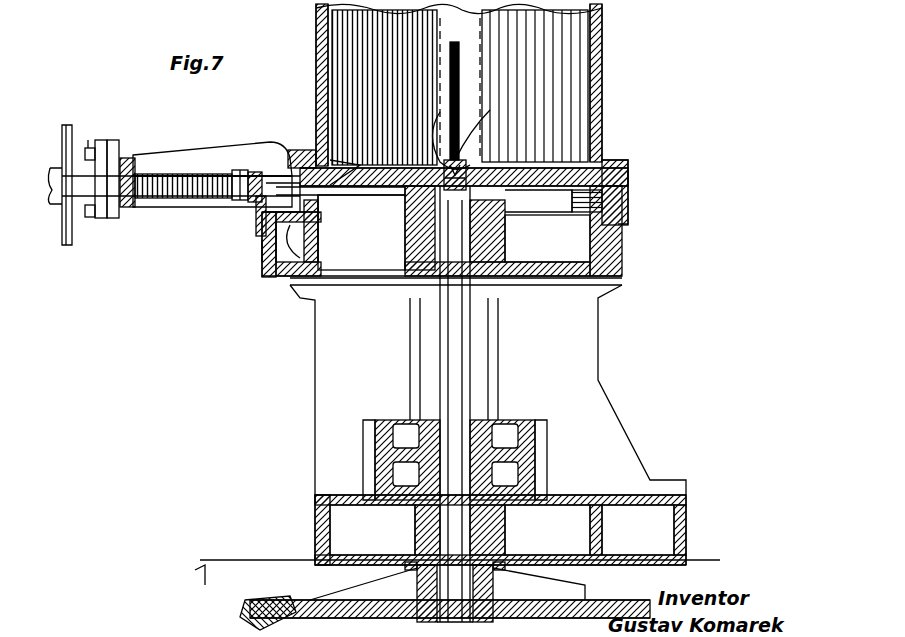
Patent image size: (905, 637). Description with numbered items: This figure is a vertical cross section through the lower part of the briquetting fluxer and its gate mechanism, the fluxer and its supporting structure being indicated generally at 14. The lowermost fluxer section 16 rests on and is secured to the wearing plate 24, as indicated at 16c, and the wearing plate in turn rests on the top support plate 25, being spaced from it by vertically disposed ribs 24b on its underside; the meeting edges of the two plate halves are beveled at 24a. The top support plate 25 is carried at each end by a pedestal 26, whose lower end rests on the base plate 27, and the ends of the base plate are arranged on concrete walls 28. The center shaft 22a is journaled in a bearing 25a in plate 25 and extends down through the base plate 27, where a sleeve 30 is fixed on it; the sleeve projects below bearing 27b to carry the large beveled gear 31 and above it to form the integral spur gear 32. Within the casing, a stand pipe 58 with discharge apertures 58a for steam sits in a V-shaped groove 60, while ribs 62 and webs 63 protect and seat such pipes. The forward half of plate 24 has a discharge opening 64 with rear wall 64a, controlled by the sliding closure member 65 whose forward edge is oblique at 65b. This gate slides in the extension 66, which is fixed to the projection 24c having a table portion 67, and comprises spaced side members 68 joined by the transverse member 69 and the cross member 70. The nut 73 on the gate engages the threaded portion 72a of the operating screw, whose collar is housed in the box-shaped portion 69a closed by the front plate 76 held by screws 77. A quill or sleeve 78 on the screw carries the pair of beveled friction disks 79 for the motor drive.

The casing 14 is at (300, 530).
The fluxer section 16 is at (316, 18).
The securing point of fluxer section 16c is at (628, 160).
The center shaft 22a is at (470, 330).
The wearing plate 24 is at (628, 182).
The beveled meeting edges 24a is at (462, 170).
The vertically disposed ribs 24b is at (515, 204).
The projection 24c is at (262, 275).
The top support plate 25 is at (622, 240).
The bearings 25a is at (510, 240).
The pedestal 26 is at (598, 332).
The base plate 27 is at (686, 522).
The bearing 27b is at (508, 534).
The concrete walls 28 is at (200, 572).
The sleeve 30 is at (418, 528).
The large beveled gear 31 is at (320, 600).
The spur gear 32 is at (378, 440).
The stand pipes 58 is at (462, 80).
The discharge apertures 58a is at (458, 84).
The V-shaped groove 60 is at (470, 24).
The inwardly projecting ribs 62 is at (320, 120).
The horizontally disposed webs 63 is at (470, 108).
The longitudinally disposed opening 64 is at (368, 205).
The rear wall of opening 64a is at (410, 280).
The closure member 65 is at (335, 150).
The oblique forward edge 65b is at (410, 225).
The extension 66 is at (220, 145).
The table portion 67 is at (258, 225).
The horizontally disposed members 68 is at (150, 157).
The transverse member 69 is at (115, 220).
The box-shaped portion 69a is at (140, 210).
The cross member 70 is at (265, 255).
The threaded portion of screw 72a is at (200, 208).
The nut 73 is at (238, 172).
The front plate 76 is at (92, 214).
The screws 77 is at (90, 148).
The quill or sleeve 78 is at (52, 210).
The beveled friction disks 79 is at (66, 125).